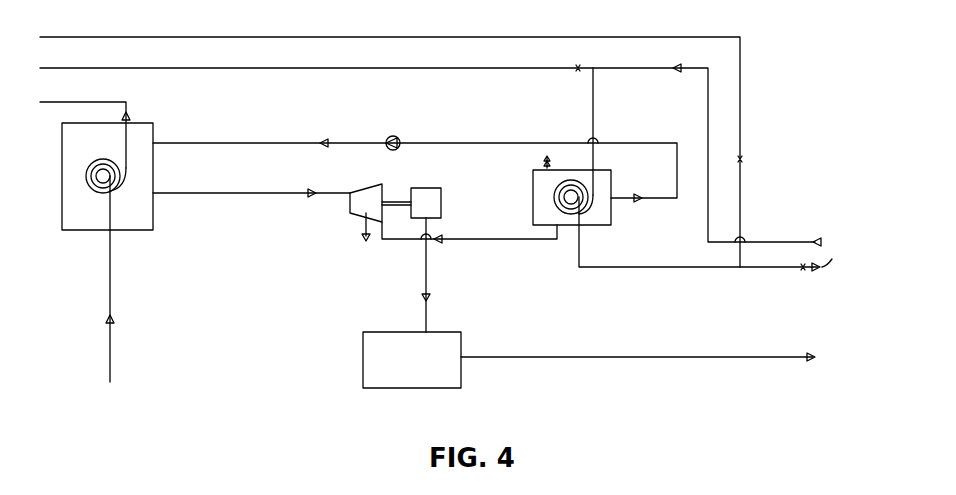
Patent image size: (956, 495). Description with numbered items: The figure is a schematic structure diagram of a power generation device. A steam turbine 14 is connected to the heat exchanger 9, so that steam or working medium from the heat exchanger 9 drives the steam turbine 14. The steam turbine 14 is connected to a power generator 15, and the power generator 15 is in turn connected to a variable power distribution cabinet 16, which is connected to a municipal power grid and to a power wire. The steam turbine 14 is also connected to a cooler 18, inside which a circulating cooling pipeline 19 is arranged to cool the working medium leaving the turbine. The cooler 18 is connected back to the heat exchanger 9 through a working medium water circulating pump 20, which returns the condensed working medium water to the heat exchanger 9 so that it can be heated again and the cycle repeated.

The heat exchanger 9 is at (130, 223).
The steam turbine 14 is at (365, 202).
The power generator 15 is at (423, 202).
The variable power distribution cabinet 16 is at (392, 355).
The cooler 18 is at (597, 218).
The circulating cooling pipeline 19 is at (563, 200).
The working medium water circulating pump 20 is at (394, 136).